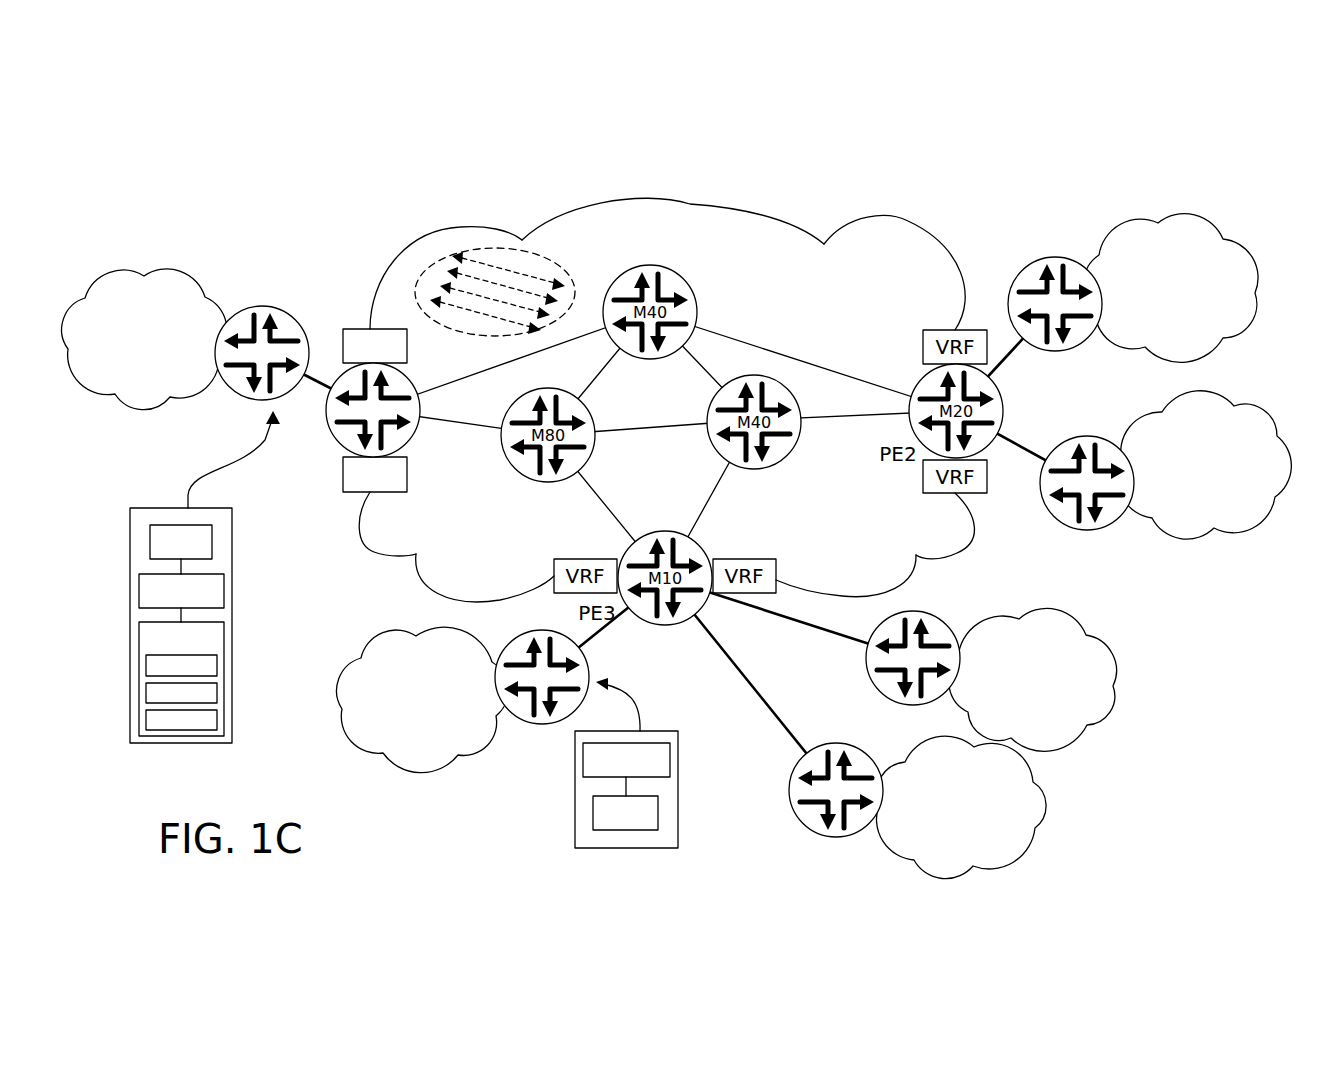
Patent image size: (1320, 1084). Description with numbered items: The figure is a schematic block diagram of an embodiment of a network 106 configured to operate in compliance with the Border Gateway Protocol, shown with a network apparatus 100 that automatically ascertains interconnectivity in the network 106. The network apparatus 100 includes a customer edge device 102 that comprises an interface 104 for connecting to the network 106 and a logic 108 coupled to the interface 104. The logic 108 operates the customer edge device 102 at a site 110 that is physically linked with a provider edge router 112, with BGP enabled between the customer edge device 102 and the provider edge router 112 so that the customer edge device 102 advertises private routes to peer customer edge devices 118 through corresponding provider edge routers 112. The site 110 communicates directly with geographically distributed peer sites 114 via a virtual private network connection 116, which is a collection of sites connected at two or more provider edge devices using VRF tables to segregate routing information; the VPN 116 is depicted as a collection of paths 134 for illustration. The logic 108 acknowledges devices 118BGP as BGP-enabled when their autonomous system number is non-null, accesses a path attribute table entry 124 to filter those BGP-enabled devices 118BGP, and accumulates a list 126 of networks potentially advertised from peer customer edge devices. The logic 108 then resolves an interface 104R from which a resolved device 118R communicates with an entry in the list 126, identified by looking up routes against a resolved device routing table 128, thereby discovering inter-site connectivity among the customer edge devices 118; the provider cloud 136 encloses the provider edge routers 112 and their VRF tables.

The network apparatus 100 is at (182, 577).
The customer edge device 102 is at (258, 400).
The interface 104 is at (212, 542).
The interface of resolved device 104R is at (658, 813).
The network 106 is at (1086, 197).
The logic 108 is at (224, 596).
The site 110 is at (148, 397).
The provider edge router 112 is at (418, 438).
The peer sites 114 is at (1240, 348).
The virtual private network (VPN) connection 116 is at (472, 336).
The customer edge devices 118 is at (1099, 530).
The BGP-enabled devices 118BGP is at (1095, 341).
The resolved device 118R is at (506, 642).
The path attribute table entry 124 is at (217, 668).
The list of networks 126 is at (217, 695).
The resolved device routing table 128 is at (217, 722).
The paths 134 is at (510, 276).
The provider network cloud 136 is at (843, 262).